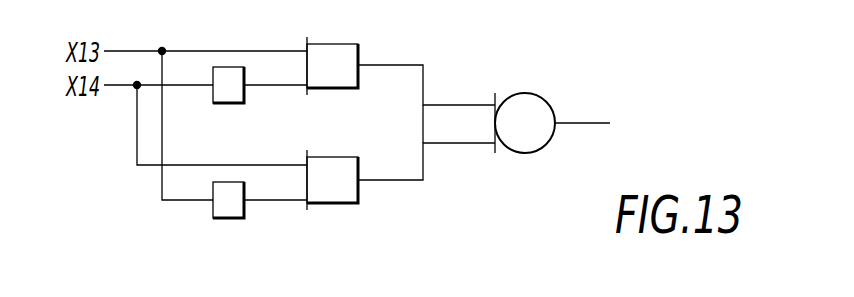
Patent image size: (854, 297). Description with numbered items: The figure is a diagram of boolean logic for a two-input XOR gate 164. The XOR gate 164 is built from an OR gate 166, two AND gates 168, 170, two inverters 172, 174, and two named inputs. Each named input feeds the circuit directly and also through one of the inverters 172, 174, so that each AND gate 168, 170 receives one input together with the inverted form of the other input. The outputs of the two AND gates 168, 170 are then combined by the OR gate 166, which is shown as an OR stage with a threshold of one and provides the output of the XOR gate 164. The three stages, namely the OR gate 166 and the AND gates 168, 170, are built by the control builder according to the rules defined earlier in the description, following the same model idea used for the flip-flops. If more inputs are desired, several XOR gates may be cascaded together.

The two-input XOR gate 164 is at (447, 258).
The OR gate 166 is at (540, 97).
The AND gate 168 is at (345, 44).
The AND gate 170 is at (345, 157).
The inverter 172 is at (226, 103).
The inverter 174 is at (226, 218).